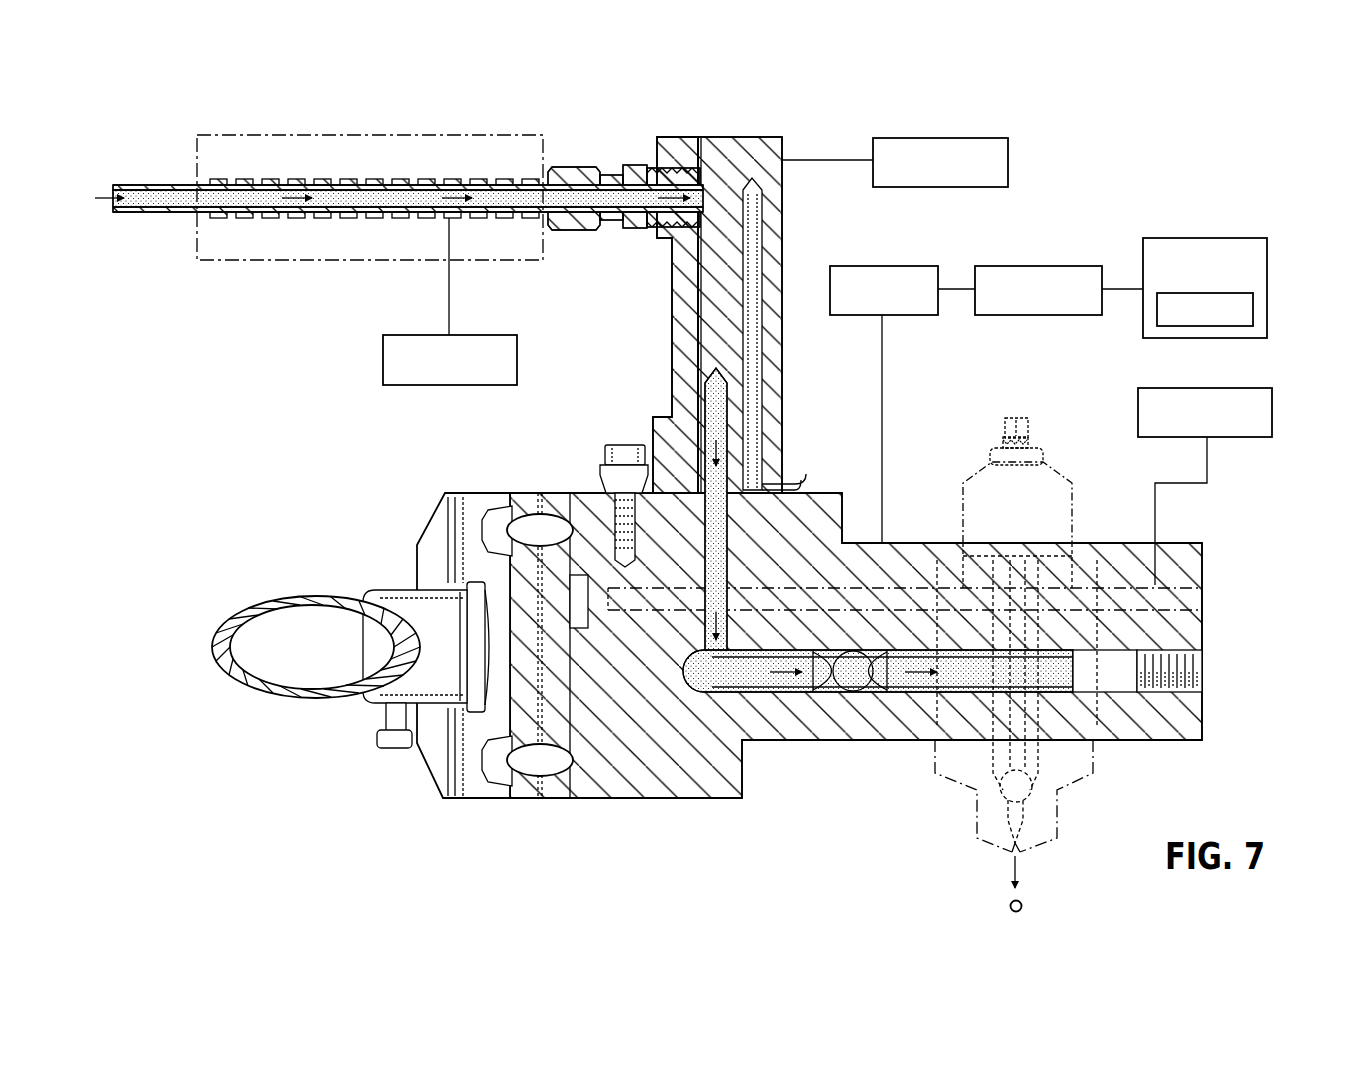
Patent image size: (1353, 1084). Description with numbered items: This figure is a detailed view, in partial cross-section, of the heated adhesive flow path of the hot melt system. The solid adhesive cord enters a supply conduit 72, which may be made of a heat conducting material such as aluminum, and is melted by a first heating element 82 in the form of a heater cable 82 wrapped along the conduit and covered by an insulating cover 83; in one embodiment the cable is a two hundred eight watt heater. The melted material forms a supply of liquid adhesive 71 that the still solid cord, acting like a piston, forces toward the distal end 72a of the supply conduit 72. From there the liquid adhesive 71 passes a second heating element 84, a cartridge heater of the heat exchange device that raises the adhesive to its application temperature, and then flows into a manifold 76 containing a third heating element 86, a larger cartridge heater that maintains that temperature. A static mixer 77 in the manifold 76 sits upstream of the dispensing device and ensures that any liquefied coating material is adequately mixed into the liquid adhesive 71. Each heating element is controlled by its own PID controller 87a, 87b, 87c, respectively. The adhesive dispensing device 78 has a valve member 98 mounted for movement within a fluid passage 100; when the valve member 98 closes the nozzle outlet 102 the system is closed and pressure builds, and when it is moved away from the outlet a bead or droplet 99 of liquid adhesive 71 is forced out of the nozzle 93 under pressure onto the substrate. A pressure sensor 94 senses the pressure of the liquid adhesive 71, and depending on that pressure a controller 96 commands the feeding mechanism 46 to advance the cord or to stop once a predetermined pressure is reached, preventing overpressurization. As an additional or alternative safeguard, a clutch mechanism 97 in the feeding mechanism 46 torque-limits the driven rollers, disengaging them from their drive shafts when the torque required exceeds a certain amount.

The feeding mechanism 46 is at (1200, 238).
The liquid adhesive 71 is at (719, 494).
The supply conduit 72 is at (157, 183).
The distal end of the supply conduit 72a is at (592, 185).
The manifold 76 is at (914, 741).
The static mixer 77 is at (857, 695).
The adhesive dispensing device 78 is at (1078, 489).
The first heating element 82 is at (372, 178).
The insulating cover 83 is at (318, 262).
The second heating element 84 is at (763, 208).
The third heating element 86 is at (1195, 585).
The PID controller 87a is at (425, 335).
The PID controller 87b is at (928, 138).
The PID controller 87c is at (1138, 397).
The nozzle 93 is at (1060, 813).
The pressure sensor 94 is at (918, 266).
The controller 96 is at (1060, 266).
The clutch mechanism 97 is at (1253, 309).
The valve member 98 is at (985, 795).
The bead or droplet 99 is at (1009, 907).
The fluid passage 100 is at (1032, 760).
The nozzle outlet 102 is at (1032, 840).